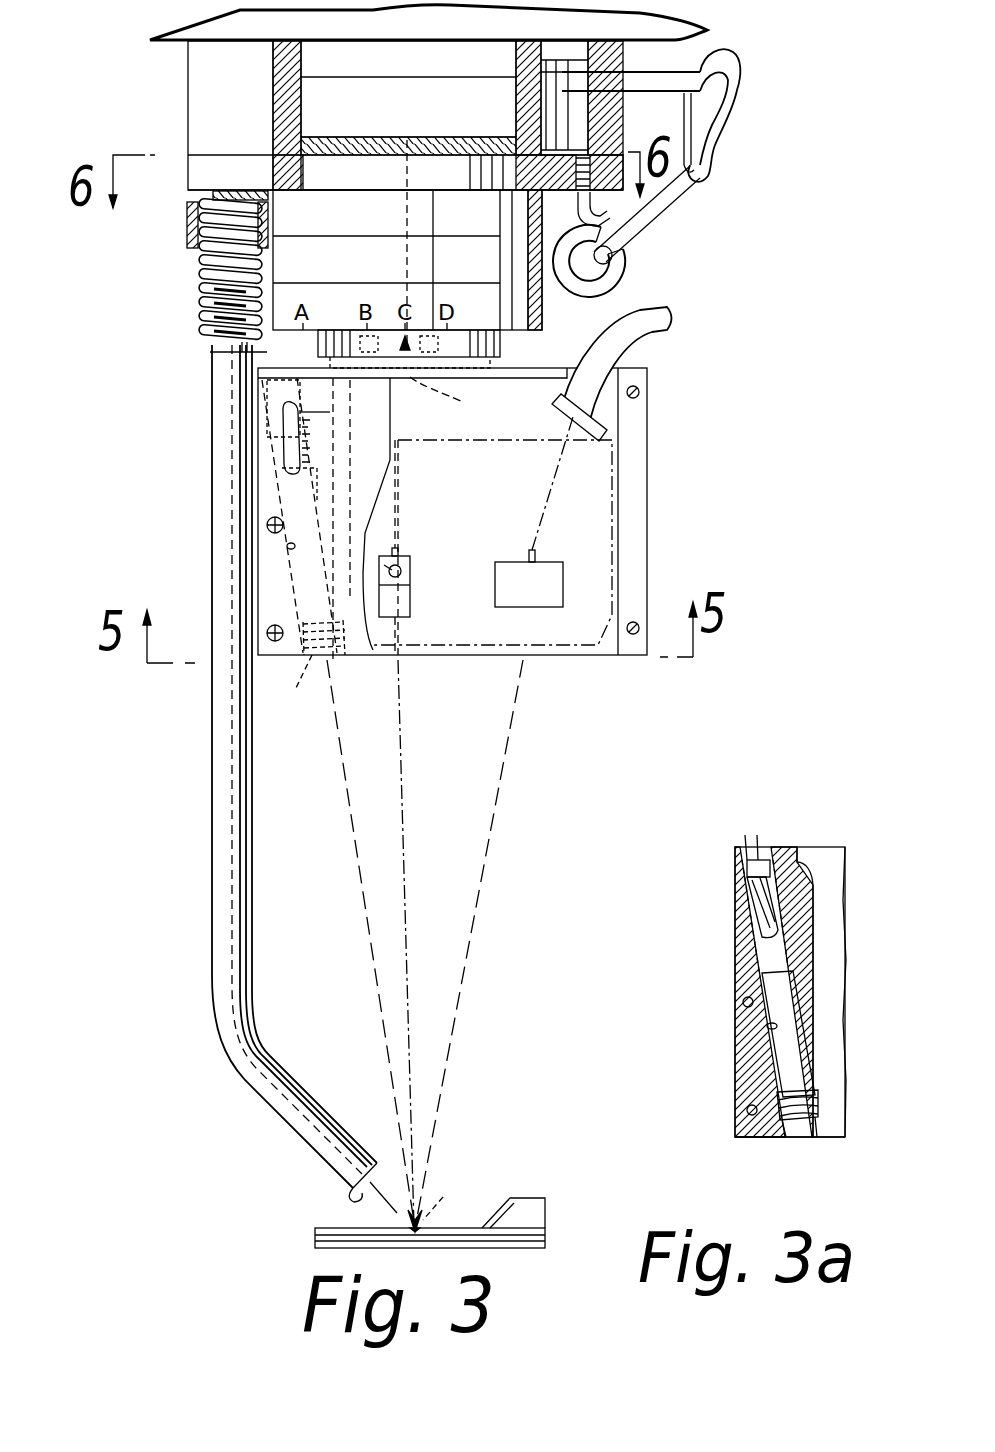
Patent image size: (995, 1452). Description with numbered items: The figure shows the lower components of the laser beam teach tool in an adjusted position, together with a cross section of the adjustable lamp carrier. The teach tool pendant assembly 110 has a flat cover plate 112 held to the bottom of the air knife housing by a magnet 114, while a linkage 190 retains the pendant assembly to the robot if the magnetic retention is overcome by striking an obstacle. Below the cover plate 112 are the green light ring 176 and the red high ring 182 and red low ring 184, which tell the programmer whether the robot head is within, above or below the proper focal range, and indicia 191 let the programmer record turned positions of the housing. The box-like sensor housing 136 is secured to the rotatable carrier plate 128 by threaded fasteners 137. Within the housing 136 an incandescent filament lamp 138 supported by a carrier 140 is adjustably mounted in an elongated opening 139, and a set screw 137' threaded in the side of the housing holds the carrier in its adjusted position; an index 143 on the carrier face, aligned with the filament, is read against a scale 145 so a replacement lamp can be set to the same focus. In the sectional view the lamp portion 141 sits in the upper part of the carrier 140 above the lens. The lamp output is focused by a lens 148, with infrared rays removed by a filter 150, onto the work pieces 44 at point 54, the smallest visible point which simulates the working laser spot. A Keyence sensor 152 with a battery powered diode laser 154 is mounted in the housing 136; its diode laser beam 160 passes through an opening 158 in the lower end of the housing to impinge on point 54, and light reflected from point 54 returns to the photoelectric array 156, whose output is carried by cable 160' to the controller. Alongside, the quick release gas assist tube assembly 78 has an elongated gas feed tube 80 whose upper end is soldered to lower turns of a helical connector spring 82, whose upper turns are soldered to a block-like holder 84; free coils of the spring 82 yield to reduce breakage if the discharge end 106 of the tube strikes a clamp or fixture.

In FIG. 3, the cover plate 112 is at (205, 170).
In FIG. 3, the red high ring 182 is at (358, 207).
In FIG. 3, the green light ring 176 is at (385, 260).
In FIG. 3, the indicia 191 is at (383, 307).
In FIG. 3, the red low ring 184 is at (498, 312).
In FIG. 3, the carrier plate 128 is at (330, 343).
In FIG. 3, the holder 84 is at (188, 216).
In FIG. 3, the connector spring 82 is at (201, 266).
In FIG. 3, the magnet 114 is at (565, 88).
In FIG. 3, the linkage 190 is at (714, 133).
In FIG. 3, the teach tool pendant assembly 110 is at (643, 270).
In FIG. 3, the sensor housing 136 is at (640, 434).
In FIG. 3A, the sensor housing 136 is at (828, 845).
In FIG. 3, the cable 160' is at (664, 374).
In FIG. 3, the Keyence sensor 152 is at (440, 574).
In FIG. 3, the diode laser 154 is at (404, 598).
In FIG. 3, the photoelectric array 156 is at (560, 567).
In FIG. 3, the opening 158 is at (413, 660).
In FIG. 3A, the opening 158 is at (753, 1137).
In FIG. 3, the diode laser beam 160 is at (425, 946).
In FIG. 3, the set screw 137' is at (200, 519).
In FIG. 3A, the set screw 137' is at (689, 918).
In FIG. 3, the carrier 140 is at (283, 410).
In FIG. 3A, the carrier 140 is at (757, 960).
In FIG. 3, the index 143 is at (293, 430).
In FIG. 3, the scale 145 is at (303, 417).
In FIG. 3, the threaded fasteners 137 is at (460, 402).
In FIG. 3, the elongated opening 139 is at (290, 548).
In FIG. 3A, the elongated opening 139 is at (770, 1027).
In FIG. 3, the lens 148 is at (297, 617).
In FIG. 3A, the lens 148 is at (780, 1100).
In FIG. 3, the filter 150 is at (287, 693).
In FIG. 3A, the filter 150 is at (798, 1118).
In FIG. 3, the gas assist tube assembly 78 is at (210, 718).
In FIG. 3, the gas feed tube 80 is at (243, 1004).
In FIG. 3, the discharge end 106 is at (360, 1196).
In FIG. 3, the work pieces 44 is at (313, 1247).
In FIG. 3, the focal point 54 is at (447, 1197).
In FIG. 3A, the incandescent filament lamp 138 is at (750, 887).
In FIG. 3A, the inner tube 141 is at (753, 923).